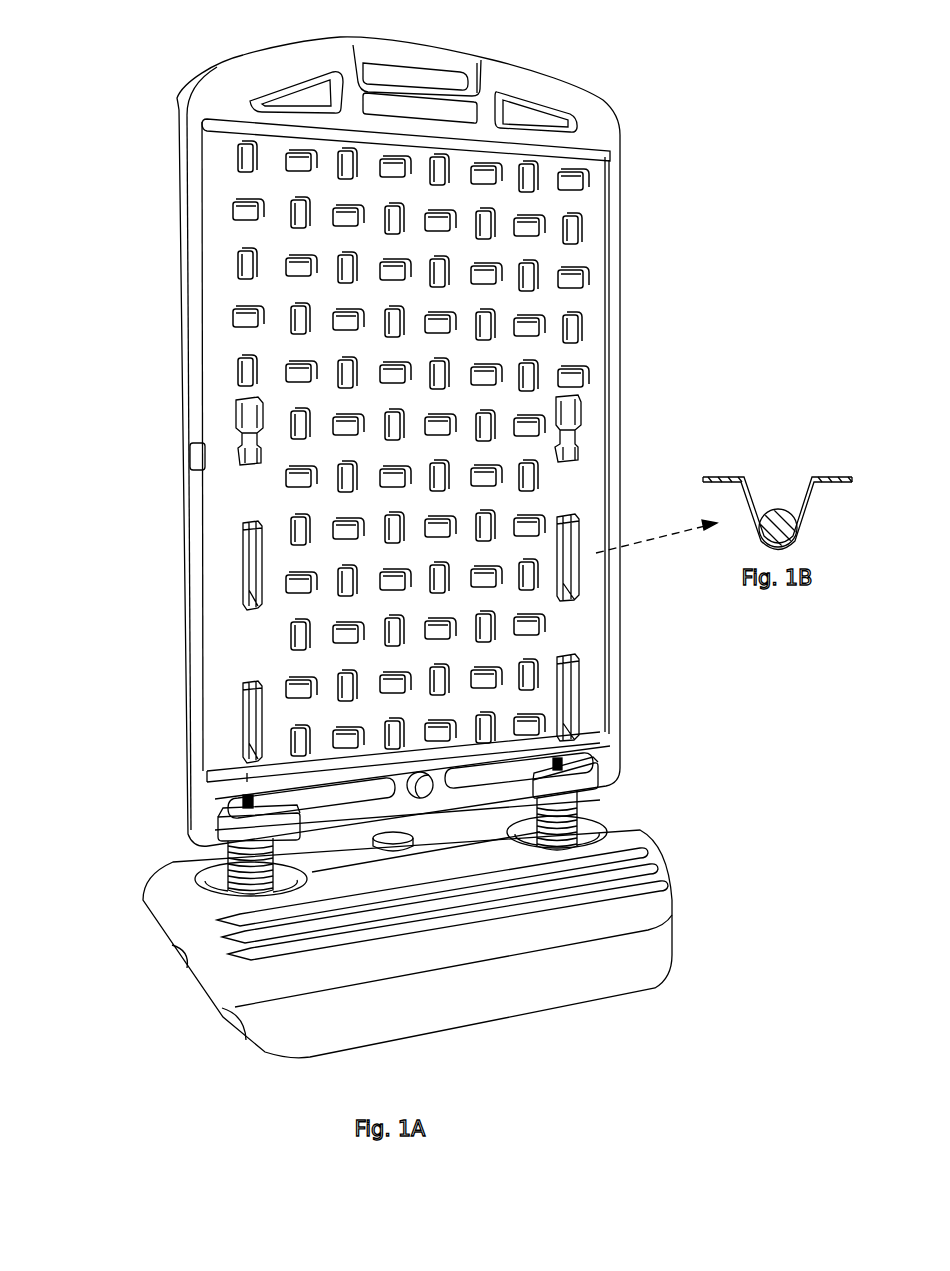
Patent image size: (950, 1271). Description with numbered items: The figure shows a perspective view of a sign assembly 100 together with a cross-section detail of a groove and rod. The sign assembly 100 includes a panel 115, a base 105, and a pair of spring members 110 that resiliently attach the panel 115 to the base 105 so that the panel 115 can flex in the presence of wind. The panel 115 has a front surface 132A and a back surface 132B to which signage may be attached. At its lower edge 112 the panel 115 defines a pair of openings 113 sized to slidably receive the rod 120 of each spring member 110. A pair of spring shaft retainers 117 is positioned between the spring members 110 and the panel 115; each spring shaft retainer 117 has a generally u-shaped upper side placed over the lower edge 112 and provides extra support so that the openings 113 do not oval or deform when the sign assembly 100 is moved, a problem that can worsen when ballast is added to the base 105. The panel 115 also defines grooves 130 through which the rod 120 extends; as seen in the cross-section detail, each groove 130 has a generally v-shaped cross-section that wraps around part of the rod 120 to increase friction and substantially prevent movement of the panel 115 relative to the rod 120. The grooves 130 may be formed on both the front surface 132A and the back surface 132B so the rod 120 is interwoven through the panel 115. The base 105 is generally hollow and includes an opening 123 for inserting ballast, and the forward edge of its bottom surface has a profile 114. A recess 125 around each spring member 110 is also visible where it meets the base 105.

In FIG. 1A, the sign assembly 100 is at (122, 68).
In FIG. 1A, the base 105 is at (673, 905).
In FIG. 1A, the spring members 110 is at (186, 855).
In FIG. 1A, the lower edge 112 is at (203, 816).
In FIG. 1A, the openings 113 is at (247, 800).
In FIG. 1A, the profile 114 is at (248, 1040).
In FIG. 1A, the panel 115 is at (192, 160).
In FIG. 1A, the spring shaft retainers 117 is at (238, 826).
In FIG. 1A, the rod 120 is at (245, 560).
In FIG. 1B, the rod 120 is at (775, 509).
In FIG. 1A, the opening 123 is at (410, 845).
In FIG. 1A, the recess 125 is at (215, 875).
In FIG. 1A, the grooves 130 is at (236, 412).
In FIG. 1B, the grooves 130 is at (828, 472).
In FIG. 1A, the front surface 132A is at (605, 240).
In FIG. 1A, the back surface 132B is at (156, 180).